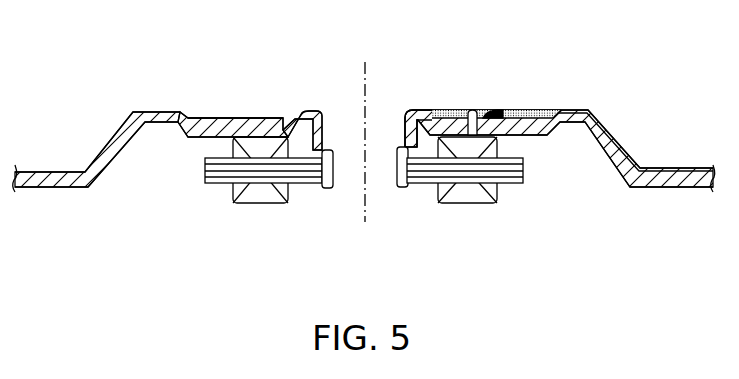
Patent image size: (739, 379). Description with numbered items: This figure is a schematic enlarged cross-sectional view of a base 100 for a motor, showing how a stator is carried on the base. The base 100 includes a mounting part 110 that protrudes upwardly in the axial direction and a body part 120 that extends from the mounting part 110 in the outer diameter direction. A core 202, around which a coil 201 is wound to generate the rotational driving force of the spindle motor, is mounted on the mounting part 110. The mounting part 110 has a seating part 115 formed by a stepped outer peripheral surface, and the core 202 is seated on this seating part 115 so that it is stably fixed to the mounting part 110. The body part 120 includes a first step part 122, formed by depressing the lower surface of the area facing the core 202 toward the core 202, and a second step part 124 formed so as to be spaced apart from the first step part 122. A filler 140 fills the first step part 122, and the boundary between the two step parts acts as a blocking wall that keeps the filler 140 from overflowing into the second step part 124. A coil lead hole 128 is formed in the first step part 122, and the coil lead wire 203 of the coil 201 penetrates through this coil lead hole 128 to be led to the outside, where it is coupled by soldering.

The base 100 is at (103, 137).
The mounting part 110 is at (333, 162).
The seating part 115 is at (308, 111).
The body part 120 is at (206, 127).
The second step part 124 is at (256, 118).
The first step part 122 is at (445, 108).
The coil lead hole 128 is at (492, 110).
The filler 140 is at (536, 109).
The coil 201 is at (468, 196).
The core 202 is at (514, 184).
The coil lead wire 203 is at (474, 109).